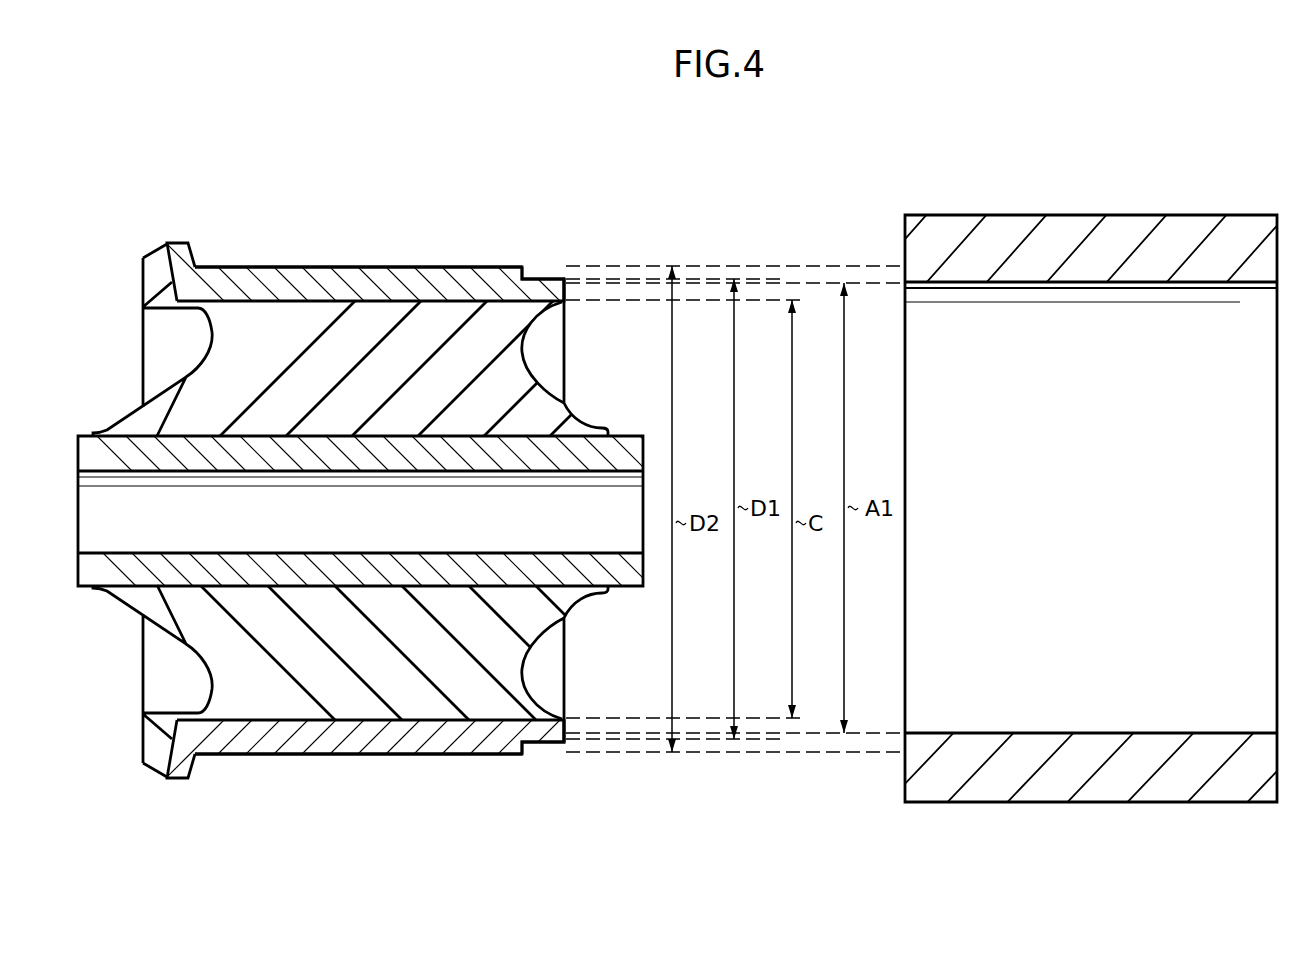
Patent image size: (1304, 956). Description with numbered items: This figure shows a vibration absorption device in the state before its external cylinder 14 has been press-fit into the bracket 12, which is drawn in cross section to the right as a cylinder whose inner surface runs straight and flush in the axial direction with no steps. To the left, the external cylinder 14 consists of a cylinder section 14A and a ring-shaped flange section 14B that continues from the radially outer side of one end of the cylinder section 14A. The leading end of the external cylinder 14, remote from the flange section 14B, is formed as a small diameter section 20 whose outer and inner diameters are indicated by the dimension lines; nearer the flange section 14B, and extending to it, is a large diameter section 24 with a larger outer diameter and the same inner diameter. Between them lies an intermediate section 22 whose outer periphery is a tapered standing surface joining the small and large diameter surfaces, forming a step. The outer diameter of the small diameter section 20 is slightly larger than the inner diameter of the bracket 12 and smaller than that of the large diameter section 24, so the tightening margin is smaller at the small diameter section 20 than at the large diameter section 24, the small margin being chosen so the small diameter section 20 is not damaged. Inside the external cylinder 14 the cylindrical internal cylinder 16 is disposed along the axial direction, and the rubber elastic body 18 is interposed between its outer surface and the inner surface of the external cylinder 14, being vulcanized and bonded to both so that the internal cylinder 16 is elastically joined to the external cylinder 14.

The bracket 12 is at (1102, 214).
The external cylinder 14 is at (312, 173).
The cylinder section 14A is at (292, 266).
The flange section 14B is at (178, 242).
The internal cylinder 16 is at (85, 588).
The rubber elastic body 18 is at (188, 378).
The small diameter section 20 is at (553, 282).
The intermediate section 22 is at (524, 267).
The large diameter section 24 is at (413, 266).